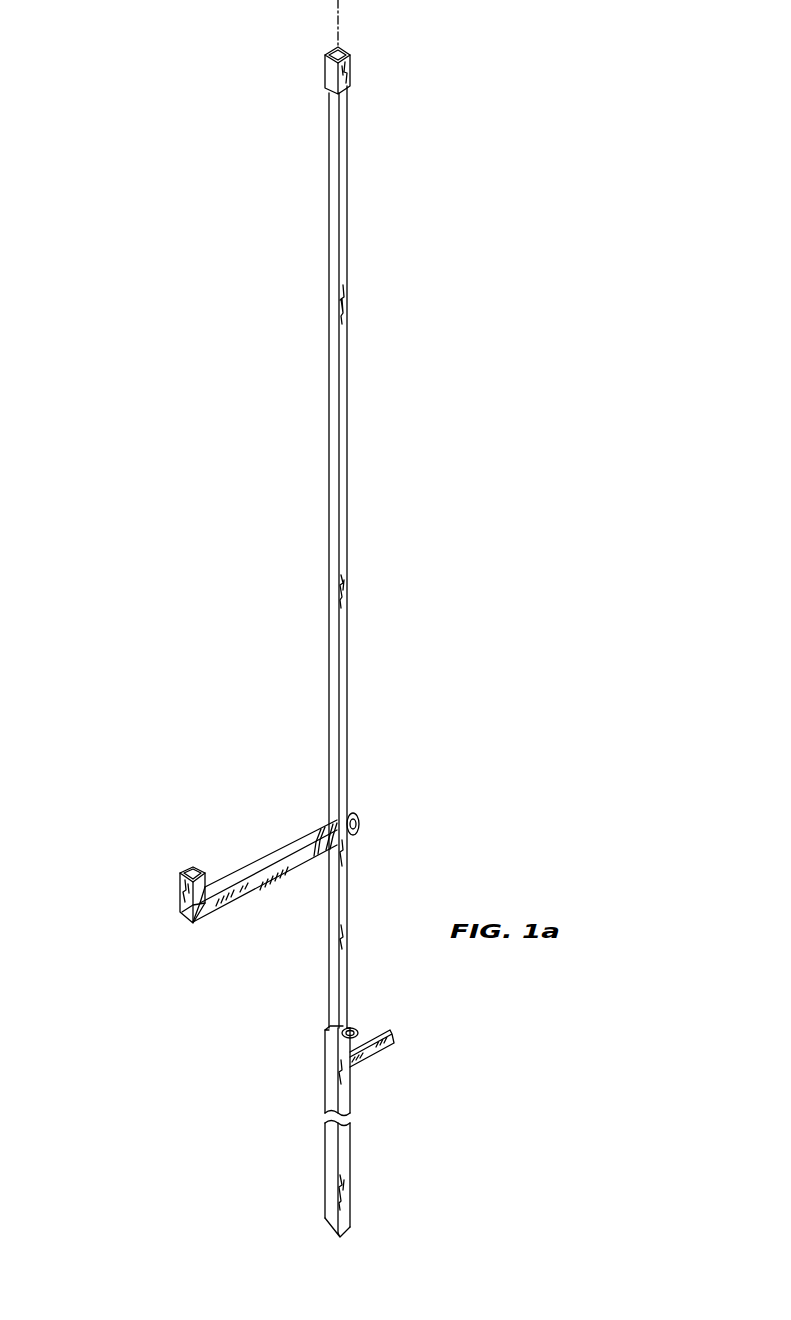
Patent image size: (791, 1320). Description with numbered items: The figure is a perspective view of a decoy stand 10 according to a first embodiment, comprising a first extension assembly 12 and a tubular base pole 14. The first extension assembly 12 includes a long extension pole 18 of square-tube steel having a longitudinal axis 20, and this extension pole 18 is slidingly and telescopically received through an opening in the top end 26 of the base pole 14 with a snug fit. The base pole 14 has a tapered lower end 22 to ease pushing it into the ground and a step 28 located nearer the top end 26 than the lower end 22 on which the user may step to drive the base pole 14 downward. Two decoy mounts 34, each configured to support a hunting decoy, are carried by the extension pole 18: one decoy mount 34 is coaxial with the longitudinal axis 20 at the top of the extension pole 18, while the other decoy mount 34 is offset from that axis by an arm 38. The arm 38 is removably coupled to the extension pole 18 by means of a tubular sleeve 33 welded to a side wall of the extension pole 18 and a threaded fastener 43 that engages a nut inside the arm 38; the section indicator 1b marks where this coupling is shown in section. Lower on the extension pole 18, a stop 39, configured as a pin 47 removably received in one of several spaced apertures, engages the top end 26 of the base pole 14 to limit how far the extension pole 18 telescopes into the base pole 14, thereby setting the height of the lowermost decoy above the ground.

The decoy stand 10 is at (103, 421).
The first extension assembly 12 is at (375, 304).
The tubular base pole 14 is at (345, 1098).
The extension pole 18 is at (342, 508).
The longitudinal axis 20 is at (341, 20).
The tapered lower end 22 is at (345, 1238).
The top end 26 is at (334, 1030).
The step 28 is at (391, 1045).
The tubular sleeve 33 is at (323, 828).
The decoy mount 34 is at (330, 72).
The arm 38 is at (267, 865).
The stop 39 is at (362, 1014).
The threaded fastener 43 is at (359, 828).
The pin 47 is at (353, 1027).
The section line 1b is at (370, 812).